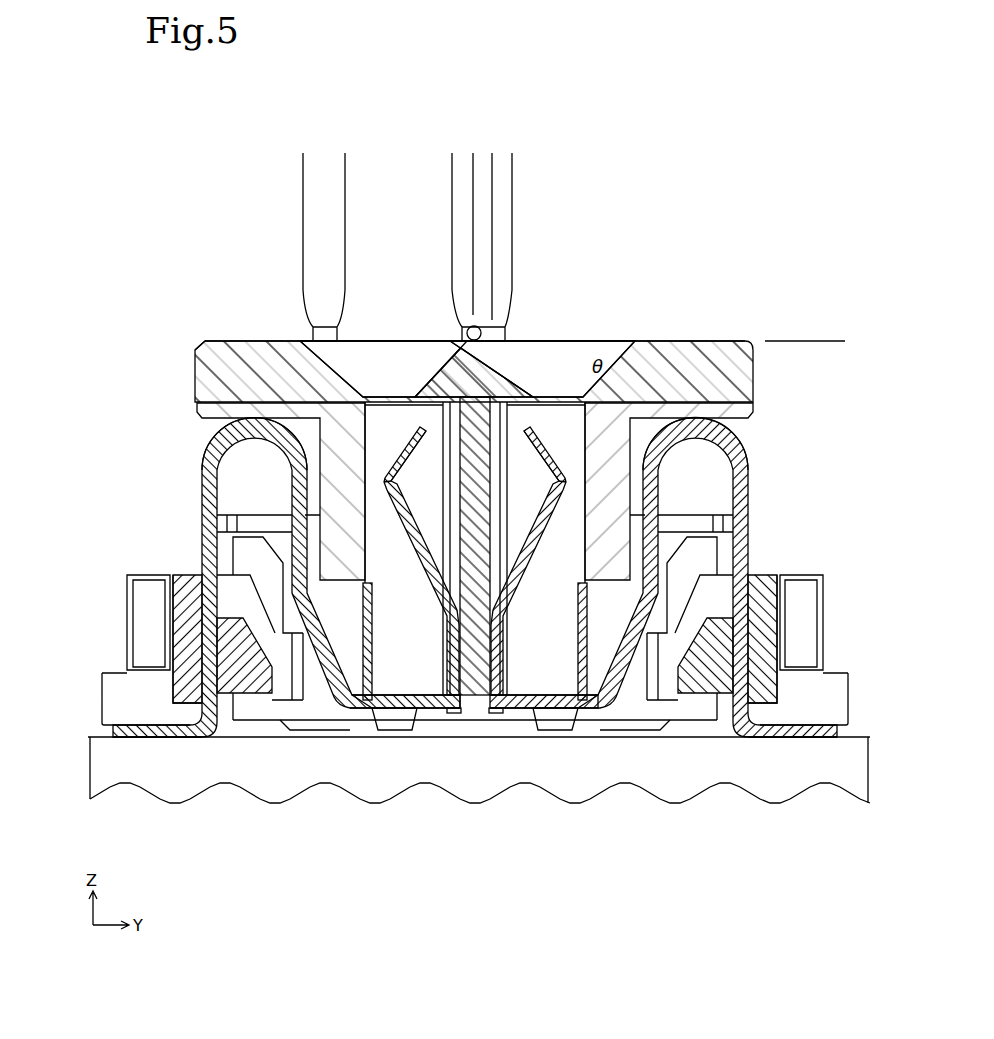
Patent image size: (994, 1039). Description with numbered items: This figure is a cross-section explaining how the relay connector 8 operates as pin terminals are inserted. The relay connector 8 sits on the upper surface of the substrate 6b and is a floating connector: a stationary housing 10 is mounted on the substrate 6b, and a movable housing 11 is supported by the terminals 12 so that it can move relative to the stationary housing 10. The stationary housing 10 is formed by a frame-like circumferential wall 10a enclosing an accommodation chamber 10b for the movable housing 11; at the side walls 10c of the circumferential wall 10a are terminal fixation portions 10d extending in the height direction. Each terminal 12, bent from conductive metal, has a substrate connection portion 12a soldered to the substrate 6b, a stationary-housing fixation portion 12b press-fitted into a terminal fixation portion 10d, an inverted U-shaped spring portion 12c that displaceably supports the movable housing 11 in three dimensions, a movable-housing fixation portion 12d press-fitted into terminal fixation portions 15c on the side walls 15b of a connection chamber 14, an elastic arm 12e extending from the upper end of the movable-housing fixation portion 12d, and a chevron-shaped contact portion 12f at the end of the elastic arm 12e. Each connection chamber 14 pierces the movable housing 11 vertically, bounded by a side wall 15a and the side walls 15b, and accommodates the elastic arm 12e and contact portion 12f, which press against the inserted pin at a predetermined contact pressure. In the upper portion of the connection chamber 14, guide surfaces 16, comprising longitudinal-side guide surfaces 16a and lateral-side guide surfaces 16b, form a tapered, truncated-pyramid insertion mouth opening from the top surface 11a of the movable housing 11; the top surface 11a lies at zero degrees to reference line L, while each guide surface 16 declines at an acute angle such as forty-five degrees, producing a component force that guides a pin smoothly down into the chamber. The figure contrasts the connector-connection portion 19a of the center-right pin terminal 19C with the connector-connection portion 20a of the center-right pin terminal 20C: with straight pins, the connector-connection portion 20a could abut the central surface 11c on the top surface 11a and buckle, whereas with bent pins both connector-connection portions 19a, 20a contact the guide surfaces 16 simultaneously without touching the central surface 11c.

The substrate 6b is at (850, 773).
The relay connector 8 is at (205, 340).
The stationary housing 10 is at (790, 573).
The circumferential wall 10a is at (559, 622).
The accommodation chamber 10b is at (643, 660).
The side wall 10c is at (163, 595).
The terminal fixation portion 10d is at (243, 700).
The movable housing 11 is at (753, 372).
The top surface 11a is at (687, 340).
The central surface 11c is at (470, 333).
The terminal 12 is at (202, 518).
The substrate connection portion 12a is at (157, 740).
The stationary-housing fixation portion 12b is at (193, 643).
The spring portion 12c is at (200, 467).
The movable-housing fixation portion 12d is at (447, 645).
The elastic arm 12e is at (407, 532).
The contact portion 12f is at (385, 488).
The connection chamber 14 is at (378, 423).
The side wall 15a is at (370, 695).
The side wall 15b is at (398, 708).
The terminal fixation portion 15c is at (450, 658).
The guide surface 16 is at (505, 261).
The longitudinal-side guide surface 16a is at (333, 350).
The lateral-side guide surface 16b is at (670, 203).
The connector-connection portion 19a is at (284, 237).
The center-right pin terminal 19C is at (302, 203).
The connector-connection portion 20a is at (532, 245).
The center-right pin terminal 20C is at (517, 233).